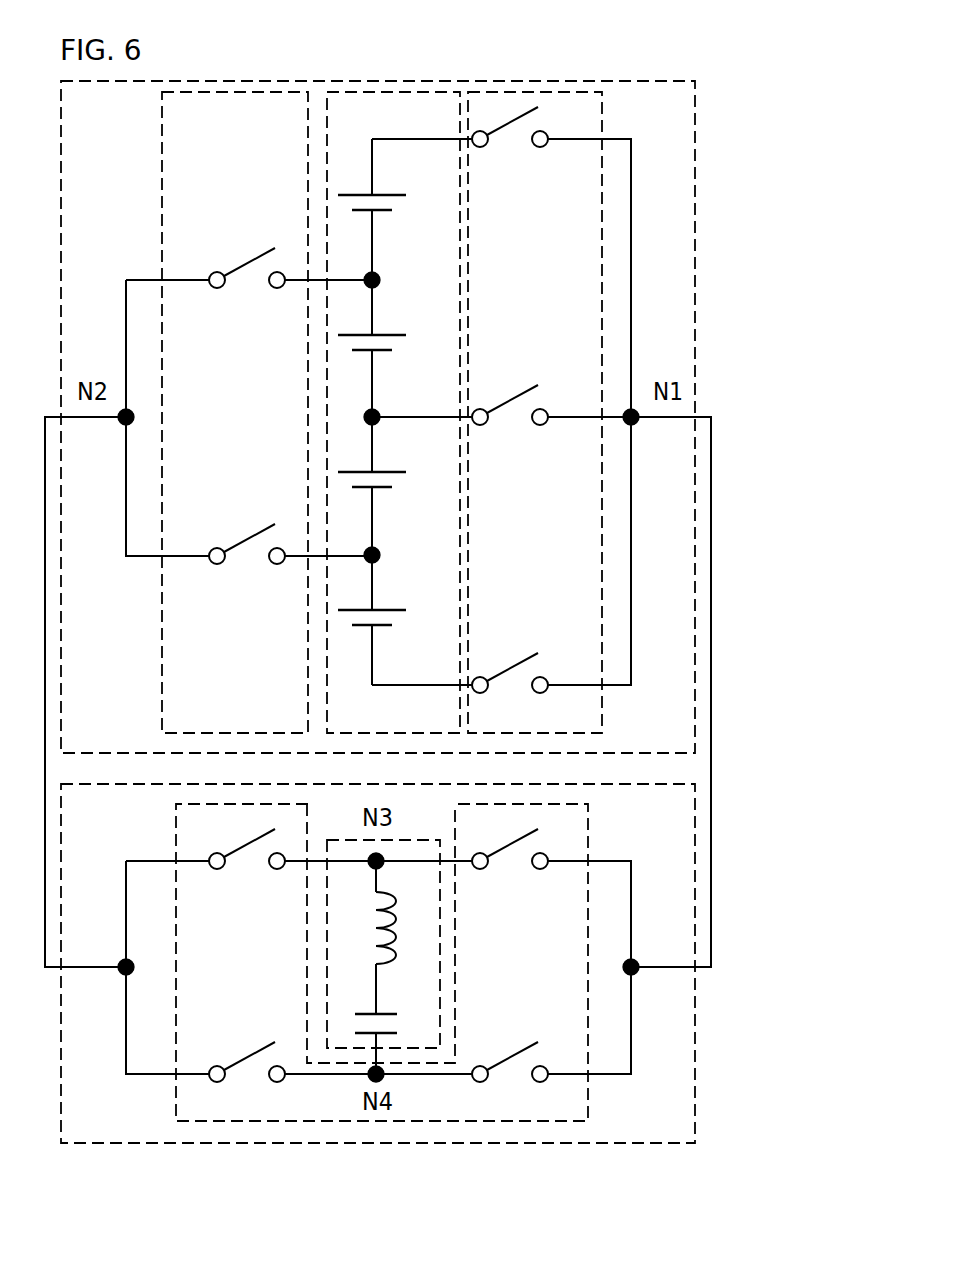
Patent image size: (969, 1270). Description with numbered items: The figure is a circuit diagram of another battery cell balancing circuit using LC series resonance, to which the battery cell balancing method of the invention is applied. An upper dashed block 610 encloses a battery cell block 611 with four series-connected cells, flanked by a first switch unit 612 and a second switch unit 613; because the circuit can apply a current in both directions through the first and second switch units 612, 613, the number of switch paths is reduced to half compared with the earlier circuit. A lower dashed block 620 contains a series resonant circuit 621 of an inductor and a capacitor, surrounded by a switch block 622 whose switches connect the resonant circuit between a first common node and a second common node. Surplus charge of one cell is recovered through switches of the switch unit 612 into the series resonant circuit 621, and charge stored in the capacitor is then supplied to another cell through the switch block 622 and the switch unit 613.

The battery cell module 610 is at (695, 139).
The battery cell unit 611 is at (395, 92).
The first switch unit 612 is at (537, 92).
The second switch unit 613 is at (235, 92).
The cell balancing circuit 620 is at (695, 1030).
The series resonant circuit 621 is at (407, 1051).
The balancing switch unit 622 is at (588, 823).